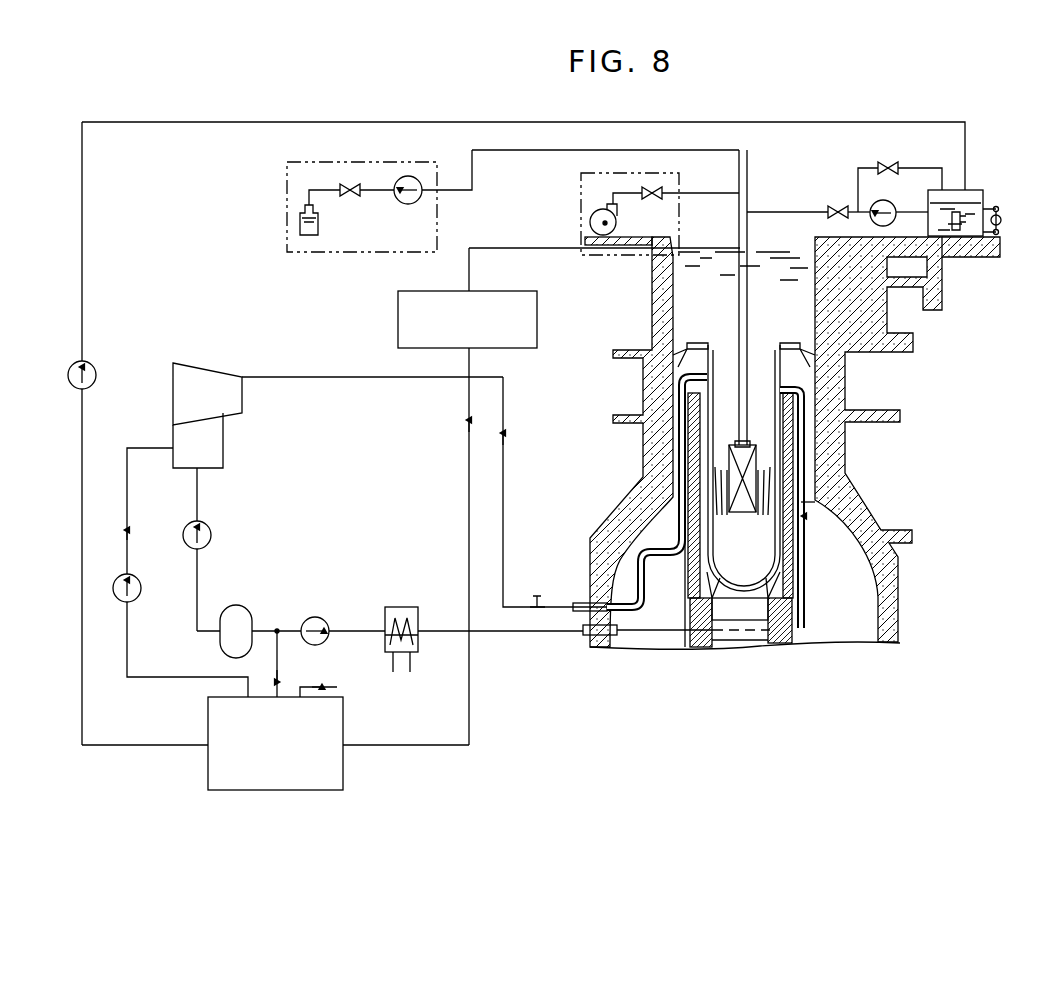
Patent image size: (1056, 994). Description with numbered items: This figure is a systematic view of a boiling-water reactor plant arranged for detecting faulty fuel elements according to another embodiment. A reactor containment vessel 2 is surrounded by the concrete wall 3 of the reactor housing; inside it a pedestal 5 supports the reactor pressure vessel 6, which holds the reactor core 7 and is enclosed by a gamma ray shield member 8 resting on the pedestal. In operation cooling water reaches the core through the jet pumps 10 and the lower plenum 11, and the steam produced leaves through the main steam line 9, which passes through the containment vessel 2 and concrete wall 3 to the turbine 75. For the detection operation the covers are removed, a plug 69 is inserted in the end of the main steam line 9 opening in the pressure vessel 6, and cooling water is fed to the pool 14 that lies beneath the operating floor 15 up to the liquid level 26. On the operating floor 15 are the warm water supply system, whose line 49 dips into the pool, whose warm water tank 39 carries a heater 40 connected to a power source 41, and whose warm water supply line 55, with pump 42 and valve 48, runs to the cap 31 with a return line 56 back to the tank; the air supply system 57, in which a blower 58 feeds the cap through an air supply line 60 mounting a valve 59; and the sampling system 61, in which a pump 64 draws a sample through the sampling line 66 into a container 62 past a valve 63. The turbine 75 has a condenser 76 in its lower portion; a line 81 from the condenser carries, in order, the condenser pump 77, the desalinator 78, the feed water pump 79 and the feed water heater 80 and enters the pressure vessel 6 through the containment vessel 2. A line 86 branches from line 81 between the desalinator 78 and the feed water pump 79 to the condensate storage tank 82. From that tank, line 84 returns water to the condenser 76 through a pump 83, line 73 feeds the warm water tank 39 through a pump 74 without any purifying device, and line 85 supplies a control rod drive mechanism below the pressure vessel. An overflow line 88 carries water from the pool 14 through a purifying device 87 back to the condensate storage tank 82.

The reactor containment vessel 2 is at (884, 622).
The concrete wall 3 is at (845, 457).
The pedestal 5 is at (696, 648).
The reactor pressure vessel 6 is at (828, 591).
The reactor core 7 is at (738, 514).
The gamma ray shield member 8 is at (690, 592).
The main steam line 9 is at (348, 377).
The jet pumps 10 is at (775, 528).
The lower plenum 11 is at (757, 560).
The pool 14 is at (766, 442).
The operating floor 15 is at (835, 237).
The liquid level 26 is at (768, 250).
The cap 31 is at (740, 444).
The warm water tank 39 is at (975, 190).
The heater 40 is at (998, 206).
The power source 41 is at (1001, 224).
The pump 42 is at (880, 309).
The valve 48 is at (808, 192).
The line 49 is at (880, 168).
The warm water supply line 55 is at (747, 300).
The return line 56 is at (932, 162).
The air supply system 57 is at (628, 257).
The blower 58 is at (590, 221).
The valve 59 is at (655, 192).
The air supply line 60 is at (726, 196).
The sampling system 61 is at (287, 235).
The container 62 is at (318, 228).
The valve 63 is at (358, 196).
The pump 64 is at (412, 176).
The sampling line 66 is at (548, 150).
The plug 69 is at (696, 383).
The line 73 is at (306, 122).
The pump 74 is at (68, 370).
The turbine 75 is at (200, 348).
The condenser 76 is at (223, 452).
The condenser pump 77 is at (210, 545).
The desalinator 78 is at (252, 620).
The feed water pump 79 is at (325, 620).
The feed water heater 80 is at (401, 607).
The line 81 is at (542, 636).
The condensate storage tank 82 is at (343, 772).
The pump 83 is at (148, 570).
The line 84 is at (166, 677).
The line 85 is at (314, 687).
The line 86 is at (286, 668).
The purifying device 87 is at (525, 348).
The overflow line 88 is at (469, 458).